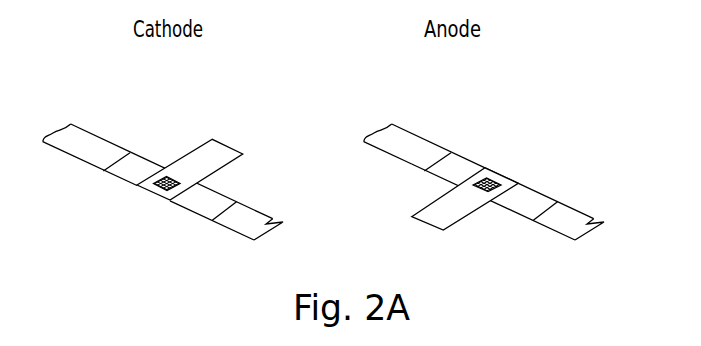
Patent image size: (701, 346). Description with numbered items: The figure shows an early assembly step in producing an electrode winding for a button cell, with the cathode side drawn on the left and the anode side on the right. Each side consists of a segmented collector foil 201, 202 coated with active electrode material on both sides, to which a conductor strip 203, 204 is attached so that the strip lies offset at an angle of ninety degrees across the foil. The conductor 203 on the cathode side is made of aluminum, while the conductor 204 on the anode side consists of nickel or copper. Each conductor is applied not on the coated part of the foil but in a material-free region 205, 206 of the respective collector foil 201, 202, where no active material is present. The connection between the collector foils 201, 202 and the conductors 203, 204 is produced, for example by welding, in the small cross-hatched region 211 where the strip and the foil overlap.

The collector foil 201 is at (276, 216).
The collector foil 202 is at (597, 216).
The conductor strip 203 is at (220, 152).
The conductor strip 204 is at (440, 217).
The material-free region 205 is at (125, 170).
The material-free region 206 is at (443, 168).
The welding region 211 is at (158, 191).